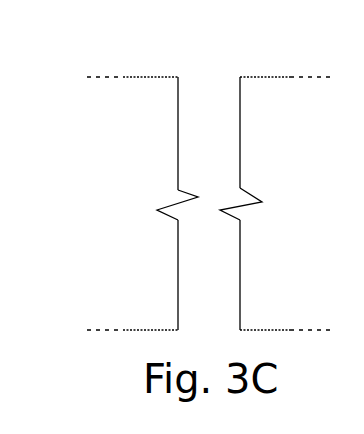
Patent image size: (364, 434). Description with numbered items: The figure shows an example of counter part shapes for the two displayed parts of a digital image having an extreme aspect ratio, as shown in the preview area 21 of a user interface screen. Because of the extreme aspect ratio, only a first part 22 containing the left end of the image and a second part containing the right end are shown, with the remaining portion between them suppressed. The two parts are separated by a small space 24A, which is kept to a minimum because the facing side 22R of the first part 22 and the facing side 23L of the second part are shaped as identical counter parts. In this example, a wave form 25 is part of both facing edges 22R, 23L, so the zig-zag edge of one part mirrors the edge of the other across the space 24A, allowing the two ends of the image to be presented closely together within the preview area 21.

The first part 22 is at (150, 145).
The space 24A is at (200, 128).
The preview area 21 is at (263, 83).
The wave form 25 is at (247, 195).
The facing side 22R is at (178, 275).
The facing side 23L is at (240, 272).